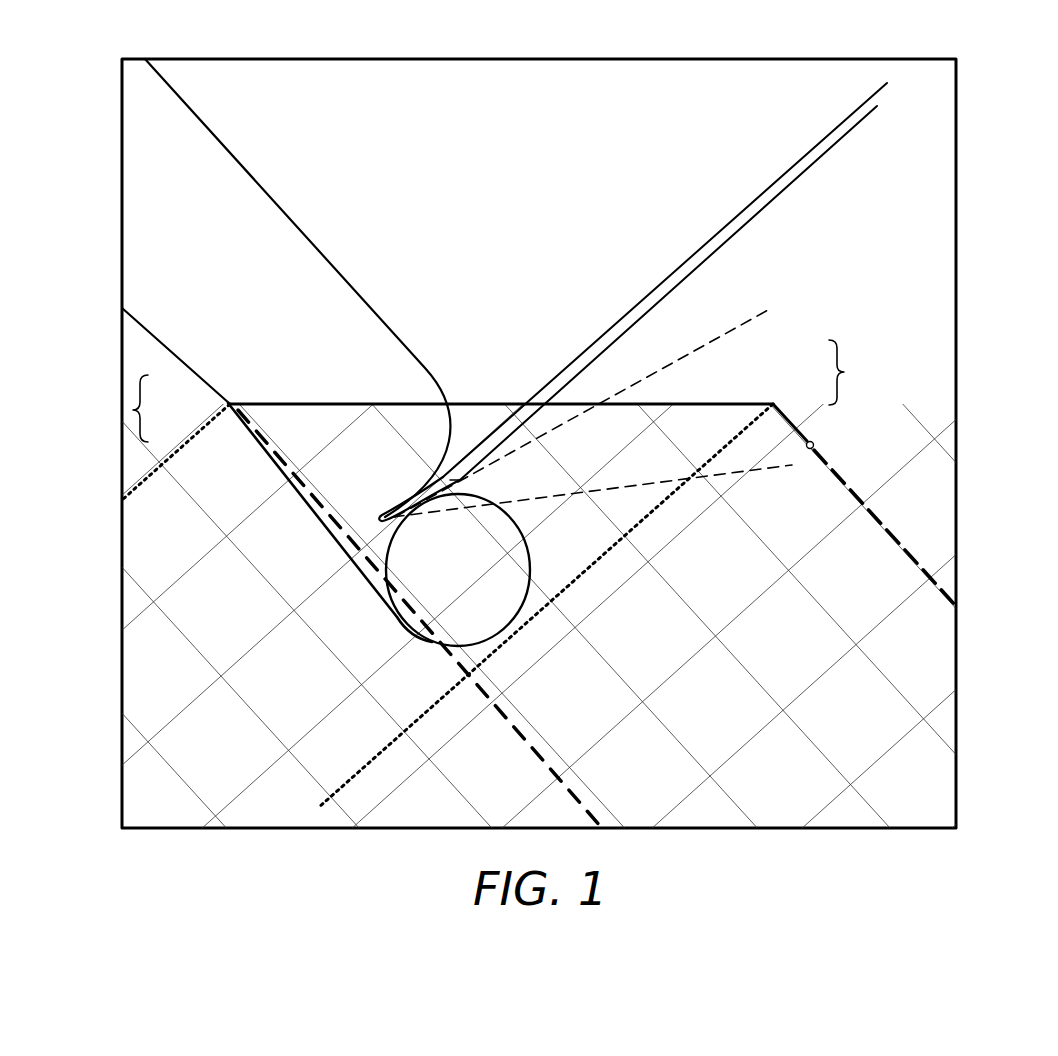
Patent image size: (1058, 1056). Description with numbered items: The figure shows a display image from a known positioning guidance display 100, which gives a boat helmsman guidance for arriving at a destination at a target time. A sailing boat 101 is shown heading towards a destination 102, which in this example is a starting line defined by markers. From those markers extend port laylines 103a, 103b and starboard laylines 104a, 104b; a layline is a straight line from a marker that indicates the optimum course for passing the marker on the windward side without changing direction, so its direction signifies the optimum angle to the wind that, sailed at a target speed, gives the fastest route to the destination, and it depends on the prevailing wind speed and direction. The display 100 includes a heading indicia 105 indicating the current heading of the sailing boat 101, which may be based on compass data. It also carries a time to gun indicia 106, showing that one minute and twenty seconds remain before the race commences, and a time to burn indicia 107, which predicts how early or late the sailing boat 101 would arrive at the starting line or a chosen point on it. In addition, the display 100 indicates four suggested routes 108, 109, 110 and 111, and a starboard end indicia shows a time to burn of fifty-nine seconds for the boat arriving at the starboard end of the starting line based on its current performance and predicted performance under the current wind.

The positioning guidance display 100 is at (935, 58).
The sailing boat 101 is at (395, 506).
The destination 102 is at (278, 402).
The port layline 103a is at (147, 484).
The port layline 103b is at (367, 763).
The starboard layline 104a is at (521, 735).
The starboard layline 104b is at (878, 520).
The heading indicia 105 is at (748, 321).
The time to gun indicia 106 is at (562, 79).
The time to burn indicia 107 is at (563, 112).
The suggested route 108 is at (737, 213).
The suggested route 109 is at (378, 315).
The suggested route 110 is at (318, 518).
The suggested route 111 is at (790, 182).